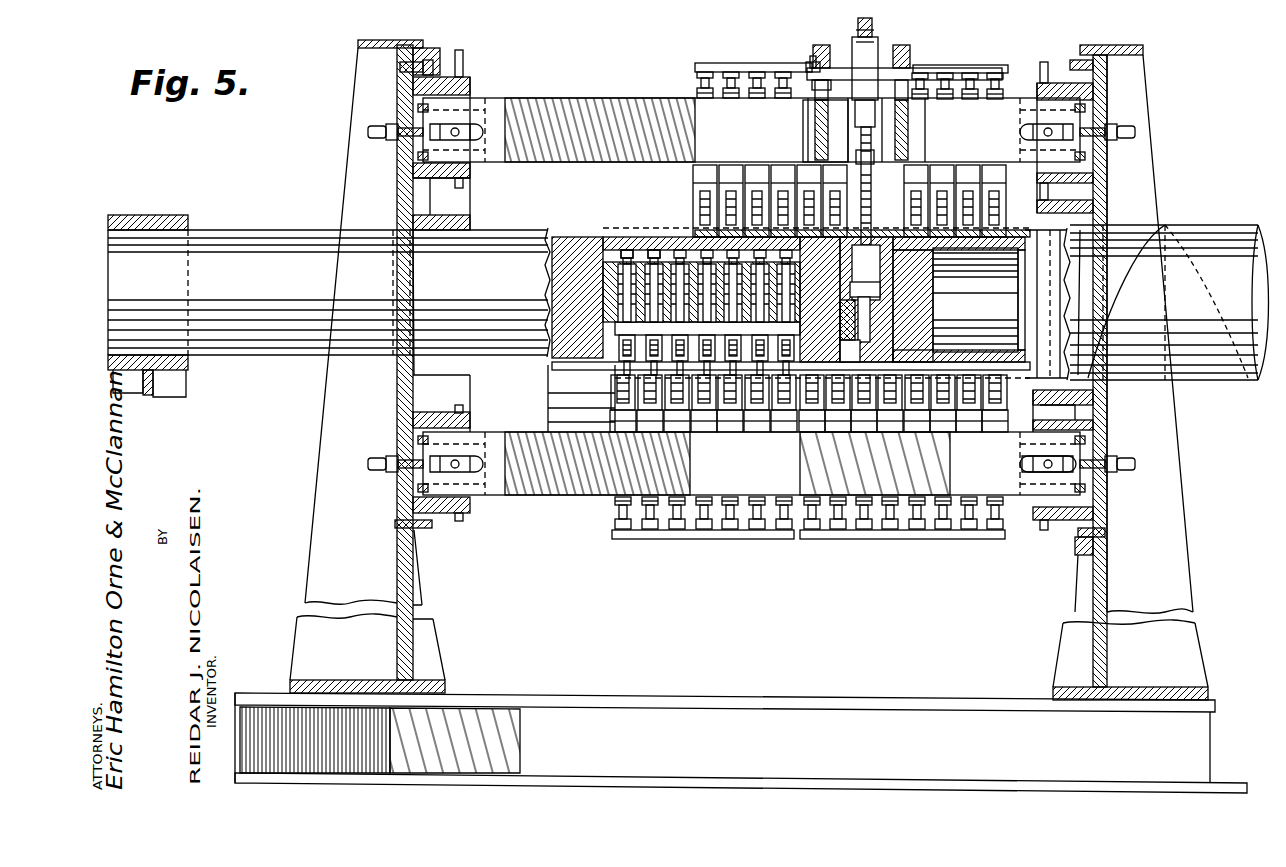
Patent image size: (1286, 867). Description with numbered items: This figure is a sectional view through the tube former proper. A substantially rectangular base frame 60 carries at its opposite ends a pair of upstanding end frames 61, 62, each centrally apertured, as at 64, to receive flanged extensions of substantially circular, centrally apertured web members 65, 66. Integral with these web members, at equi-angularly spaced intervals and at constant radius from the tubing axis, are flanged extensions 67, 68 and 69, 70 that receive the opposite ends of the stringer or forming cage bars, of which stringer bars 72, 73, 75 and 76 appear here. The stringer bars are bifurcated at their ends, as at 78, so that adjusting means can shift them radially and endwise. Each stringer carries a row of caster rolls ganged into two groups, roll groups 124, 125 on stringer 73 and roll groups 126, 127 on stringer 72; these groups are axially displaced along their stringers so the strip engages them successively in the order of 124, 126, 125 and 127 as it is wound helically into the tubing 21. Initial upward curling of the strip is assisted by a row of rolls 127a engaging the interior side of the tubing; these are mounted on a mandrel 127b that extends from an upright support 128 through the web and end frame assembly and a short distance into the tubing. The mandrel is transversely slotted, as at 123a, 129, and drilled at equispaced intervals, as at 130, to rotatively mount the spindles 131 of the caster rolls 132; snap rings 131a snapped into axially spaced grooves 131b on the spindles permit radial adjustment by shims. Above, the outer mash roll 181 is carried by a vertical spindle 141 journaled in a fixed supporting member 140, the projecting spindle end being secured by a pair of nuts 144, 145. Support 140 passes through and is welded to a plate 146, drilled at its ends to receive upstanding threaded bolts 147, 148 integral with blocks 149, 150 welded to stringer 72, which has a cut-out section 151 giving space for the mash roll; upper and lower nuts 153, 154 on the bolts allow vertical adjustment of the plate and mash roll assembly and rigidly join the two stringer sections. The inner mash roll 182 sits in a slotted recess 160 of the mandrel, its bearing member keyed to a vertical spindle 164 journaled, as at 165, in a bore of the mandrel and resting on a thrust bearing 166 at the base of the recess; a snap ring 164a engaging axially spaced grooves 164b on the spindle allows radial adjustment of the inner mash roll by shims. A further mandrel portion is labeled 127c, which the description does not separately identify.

The tubing 21 is at (1206, 226).
The base frame 60 is at (705, 697).
The end frame 61 is at (330, 498).
The end frame 62 is at (1165, 509).
The central aperture 64 is at (1098, 192).
The web member 65 is at (462, 224).
The web member 66 is at (1095, 208).
The flanged extension 67 is at (462, 421).
The flanged extension 68 is at (462, 509).
The flanged extension 69 is at (1098, 426).
The flanged extension 70 is at (1062, 522).
The stringer bar 72 is at (510, 98).
The stringer bar 73 is at (400, 111).
The stringer bar 75 is at (1098, 122).
The stringer bar 76 is at (1100, 458).
The bifurcated end 78 is at (1020, 466).
The transverse slot 123a is at (580, 238).
The roll group 124 is at (716, 540).
The roll group 125 is at (895, 540).
The roll group 126 is at (706, 63).
The roll group 127 is at (968, 64).
The row of rolls 127a is at (842, 305).
The mandrel 127b is at (244, 230).
The shaft portion 127c is at (1010, 306).
The upright support 128 is at (190, 368).
The transverse slot 129 is at (845, 302).
The drilled hole 130 is at (632, 299).
The spindle 131 is at (624, 282).
The snap ring 131a is at (654, 250).
The circular groove 131b is at (627, 250).
The caster roll 132 is at (632, 350).
The supporting member 140 is at (878, 52).
The vertical spindle 141 is at (860, 21).
The nut 144 is at (878, 42).
The nut 145 is at (873, 29).
The plate 146 is at (810, 63).
The threaded bolt 147 is at (910, 54).
The threaded bolt 148 is at (820, 47).
The block 149 is at (808, 127).
The block 150 is at (914, 119).
The cut-out section 151 is at (812, 146).
The upper nut 153 is at (810, 60).
The lower nut 154 is at (816, 89).
The slotted recess 160 is at (681, 237).
The vertical spindle 164 is at (935, 280).
The snap ring 164a is at (905, 340).
The circular groove 164b is at (878, 349).
The journal bore 165 is at (920, 318).
The thrust bearing 166 is at (942, 261).
The outer mash roll 181 is at (866, 168).
The inner mash roll 182 is at (872, 236).